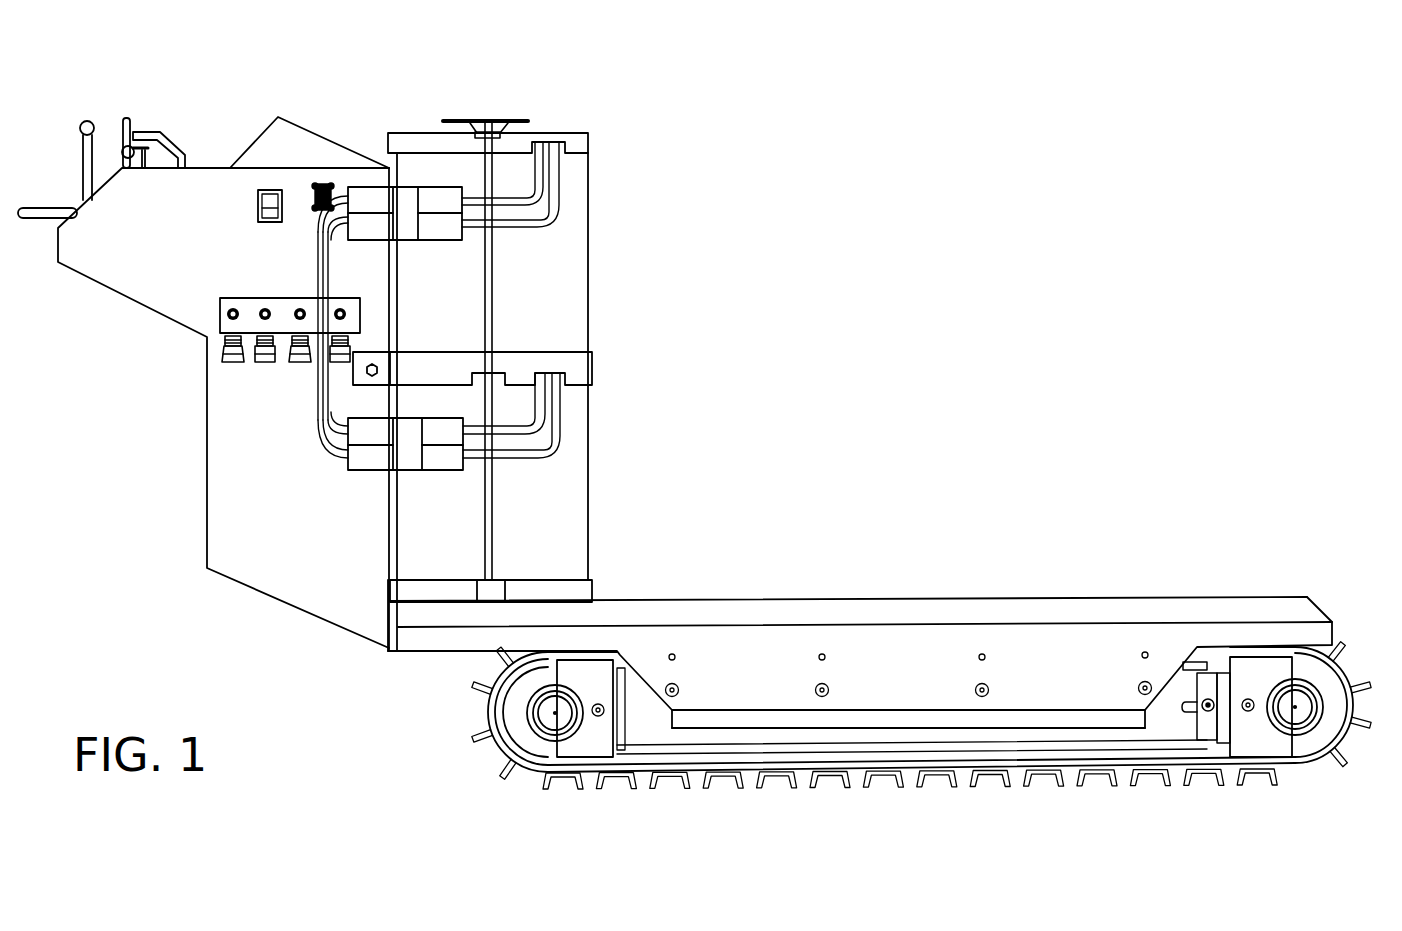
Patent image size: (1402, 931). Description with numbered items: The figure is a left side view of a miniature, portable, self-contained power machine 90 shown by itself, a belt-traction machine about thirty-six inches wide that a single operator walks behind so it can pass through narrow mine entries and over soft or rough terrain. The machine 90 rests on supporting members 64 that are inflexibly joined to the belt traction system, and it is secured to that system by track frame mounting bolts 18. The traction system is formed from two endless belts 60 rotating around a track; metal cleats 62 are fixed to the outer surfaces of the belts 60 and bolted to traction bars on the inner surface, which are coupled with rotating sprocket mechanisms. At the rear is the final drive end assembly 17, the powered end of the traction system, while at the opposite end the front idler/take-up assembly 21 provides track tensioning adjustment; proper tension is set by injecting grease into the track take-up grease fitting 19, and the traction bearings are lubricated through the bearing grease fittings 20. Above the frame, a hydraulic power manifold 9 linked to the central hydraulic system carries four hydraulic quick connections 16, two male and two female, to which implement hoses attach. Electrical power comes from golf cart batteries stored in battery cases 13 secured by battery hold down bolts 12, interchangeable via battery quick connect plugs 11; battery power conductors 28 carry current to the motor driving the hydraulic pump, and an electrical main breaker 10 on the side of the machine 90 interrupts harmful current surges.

The hydraulic power manifold 9 is at (252, 310).
The electrical main breaker 10 is at (266, 190).
The battery quick connect plug 11 is at (358, 458).
The battery hold down bolt 12 is at (489, 125).
The battery case 13 is at (576, 165).
The hydraulic quick connection 16 is at (223, 349).
The final drive end assembly 17 is at (585, 750).
The track frame mounting bolt 18 is at (1138, 688).
The track take-up grease fitting 19 is at (1210, 712).
The bearing grease fitting 20 is at (603, 707).
The front idler/take-up assembly 21 is at (1300, 705).
The battery power conductor 28 is at (316, 300).
The endless belt 60 is at (822, 775).
The metal cleat 62 is at (1002, 783).
The supporting member 64 is at (870, 718).
The power machine 90 is at (352, 120).